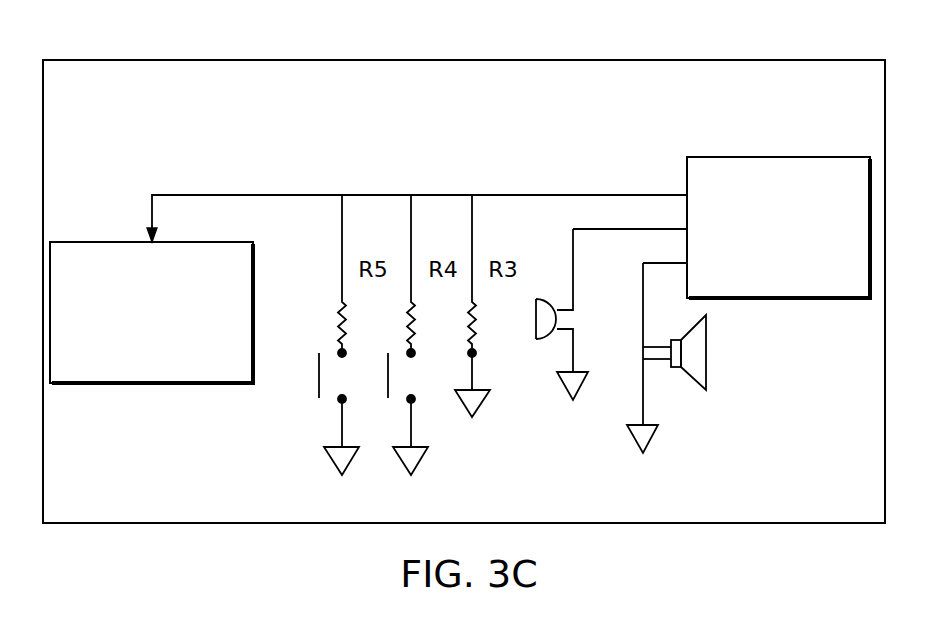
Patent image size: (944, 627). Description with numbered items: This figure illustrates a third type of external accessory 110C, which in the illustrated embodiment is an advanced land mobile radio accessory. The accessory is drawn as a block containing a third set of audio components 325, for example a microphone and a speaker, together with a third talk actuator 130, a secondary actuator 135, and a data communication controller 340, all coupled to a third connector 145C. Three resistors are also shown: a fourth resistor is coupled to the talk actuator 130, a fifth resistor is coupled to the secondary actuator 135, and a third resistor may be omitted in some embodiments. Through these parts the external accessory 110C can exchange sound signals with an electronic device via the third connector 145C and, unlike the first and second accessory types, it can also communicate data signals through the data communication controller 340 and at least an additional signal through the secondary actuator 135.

The third type of external accessory 110C is at (462, 60).
The third connector 145C is at (777, 157).
The data communication controller 340 is at (101, 241).
The secondary actuator 135 is at (319, 374).
The third talk actuator 130 is at (388, 374).
The third set of audio components 325 is at (558, 460).